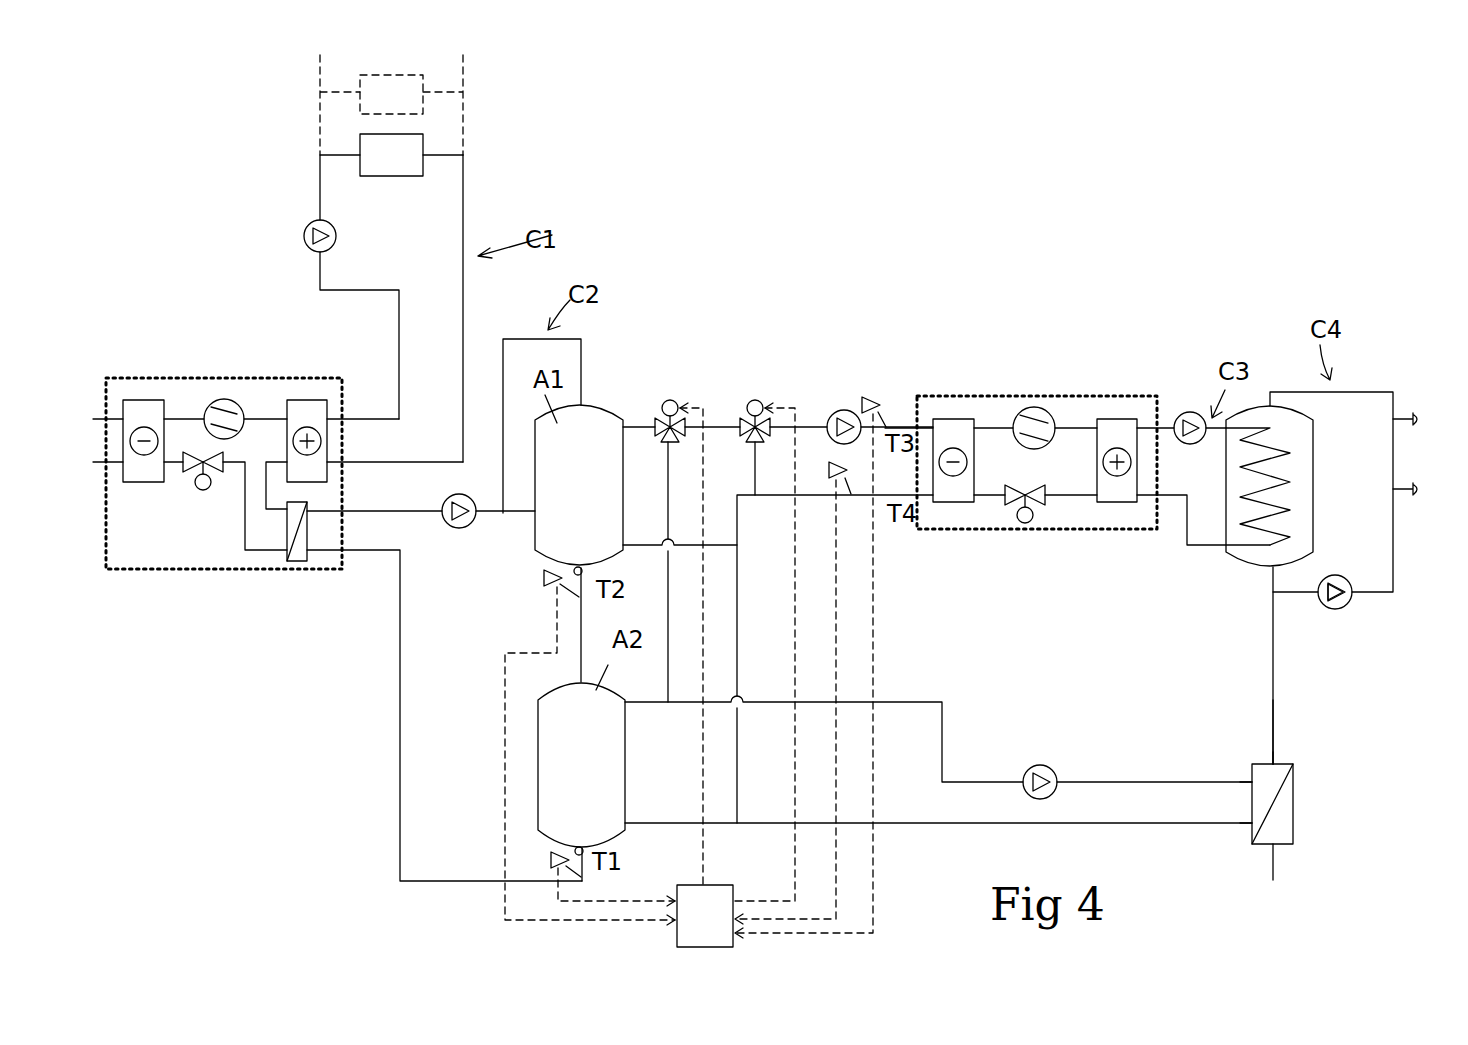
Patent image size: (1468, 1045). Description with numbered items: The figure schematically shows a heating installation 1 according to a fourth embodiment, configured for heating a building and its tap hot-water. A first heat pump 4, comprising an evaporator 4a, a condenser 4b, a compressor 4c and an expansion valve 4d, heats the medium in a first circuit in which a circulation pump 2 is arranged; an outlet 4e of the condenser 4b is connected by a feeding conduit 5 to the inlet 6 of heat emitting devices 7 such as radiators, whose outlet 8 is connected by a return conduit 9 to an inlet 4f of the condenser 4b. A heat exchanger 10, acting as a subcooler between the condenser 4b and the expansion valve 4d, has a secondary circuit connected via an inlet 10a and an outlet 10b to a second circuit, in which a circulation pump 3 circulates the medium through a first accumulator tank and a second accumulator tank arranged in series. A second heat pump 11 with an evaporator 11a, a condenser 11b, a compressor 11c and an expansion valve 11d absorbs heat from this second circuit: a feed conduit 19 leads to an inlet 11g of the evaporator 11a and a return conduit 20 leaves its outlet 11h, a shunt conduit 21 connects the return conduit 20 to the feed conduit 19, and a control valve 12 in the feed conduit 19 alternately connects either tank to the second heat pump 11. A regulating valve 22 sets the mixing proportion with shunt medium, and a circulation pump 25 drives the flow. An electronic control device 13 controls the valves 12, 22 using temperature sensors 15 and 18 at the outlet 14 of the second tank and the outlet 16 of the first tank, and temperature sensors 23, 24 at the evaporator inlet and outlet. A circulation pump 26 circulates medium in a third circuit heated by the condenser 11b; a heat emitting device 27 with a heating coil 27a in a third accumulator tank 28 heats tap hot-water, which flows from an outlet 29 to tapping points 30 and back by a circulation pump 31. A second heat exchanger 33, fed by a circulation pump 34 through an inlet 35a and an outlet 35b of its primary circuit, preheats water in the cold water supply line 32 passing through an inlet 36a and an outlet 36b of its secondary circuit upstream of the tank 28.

The heating installation 1 is at (916, 137).
The circulation pump 2 is at (305, 236).
The circulation pump 3 is at (455, 528).
The first heat pump 4 is at (188, 386).
The evaporator 4a is at (142, 410).
The condenser 4b is at (306, 400).
The compressor 4c is at (226, 398).
The expansion valve 4d is at (197, 470).
The outlet 4e is at (331, 419).
The inlet 4f is at (331, 463).
The feeding conduit 5 is at (376, 285).
The inlet 6 is at (318, 153).
The heat emitting devices 7 is at (396, 80).
The outlet 8 is at (470, 150).
The return conduit 9 is at (468, 214).
The heat exchanger 10 is at (292, 565).
The inlet 10a is at (308, 556).
The outlet 10b is at (308, 511).
The second heat pump 11 is at (1073, 522).
The evaporator 11a is at (953, 428).
The condenser 11b is at (1115, 428).
The compressor 11c is at (1034, 407).
The expansion valve 11d is at (1011, 506).
The inlet 11g is at (920, 412).
The outlet 11h is at (925, 515).
The control valve 12 is at (662, 418).
The electronic control device 13 is at (720, 898).
The outlet 14 is at (577, 851).
The temperature sensor 15 is at (550, 854).
The outlet 16 is at (575, 572).
The temperature sensor 18 is at (544, 580).
The feed conduit 19 is at (803, 422).
The return conduit 20 is at (775, 498).
The shunt conduit 21 is at (752, 472).
The regulating valve 22 is at (748, 418).
The temperature sensor 23 is at (873, 395).
The temperature sensor 24 is at (828, 466).
The circulation pump 25 is at (843, 410).
The circulation pump 26 is at (1186, 413).
The heat emitting device 27 is at (1270, 563).
The heating coil 27a is at (1282, 486).
The third accumulator tank 28 is at (1306, 450).
The outlet 29 is at (1262, 402).
The tapping points 30 is at (1410, 410).
The circulation pump 31 is at (1335, 610).
The cold water supply line 32 is at (1279, 722).
The second heat exchanger 33 is at (1283, 810).
The circulation pump 34 is at (1042, 768).
The inlet 35a is at (1250, 780).
The outlet 35b is at (1248, 830).
The inlet 36a is at (1280, 847).
The outlet 36b is at (1280, 762).